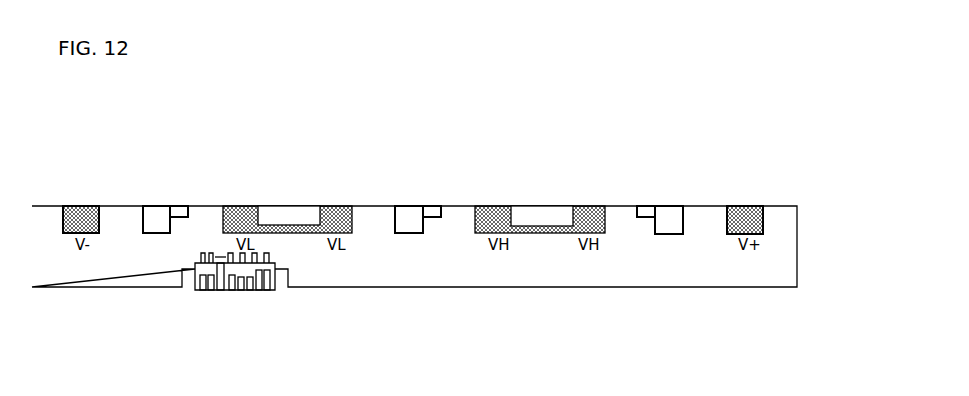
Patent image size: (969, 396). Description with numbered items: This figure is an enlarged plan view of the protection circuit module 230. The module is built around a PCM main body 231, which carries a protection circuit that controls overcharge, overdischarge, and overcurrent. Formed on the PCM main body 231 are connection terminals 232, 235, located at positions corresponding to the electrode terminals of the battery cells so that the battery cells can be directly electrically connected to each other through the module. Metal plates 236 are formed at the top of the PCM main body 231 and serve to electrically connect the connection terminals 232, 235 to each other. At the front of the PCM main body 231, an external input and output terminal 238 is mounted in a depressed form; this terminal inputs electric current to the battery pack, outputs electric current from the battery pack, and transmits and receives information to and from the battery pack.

The protection circuit module 230 is at (68, 144).
The PCM main body 231 is at (669, 270).
The connection terminal 232 is at (752, 214).
The connection terminal 235 is at (592, 215).
The metal plate 236 is at (526, 225).
The external input and output terminal 238 is at (238, 292).